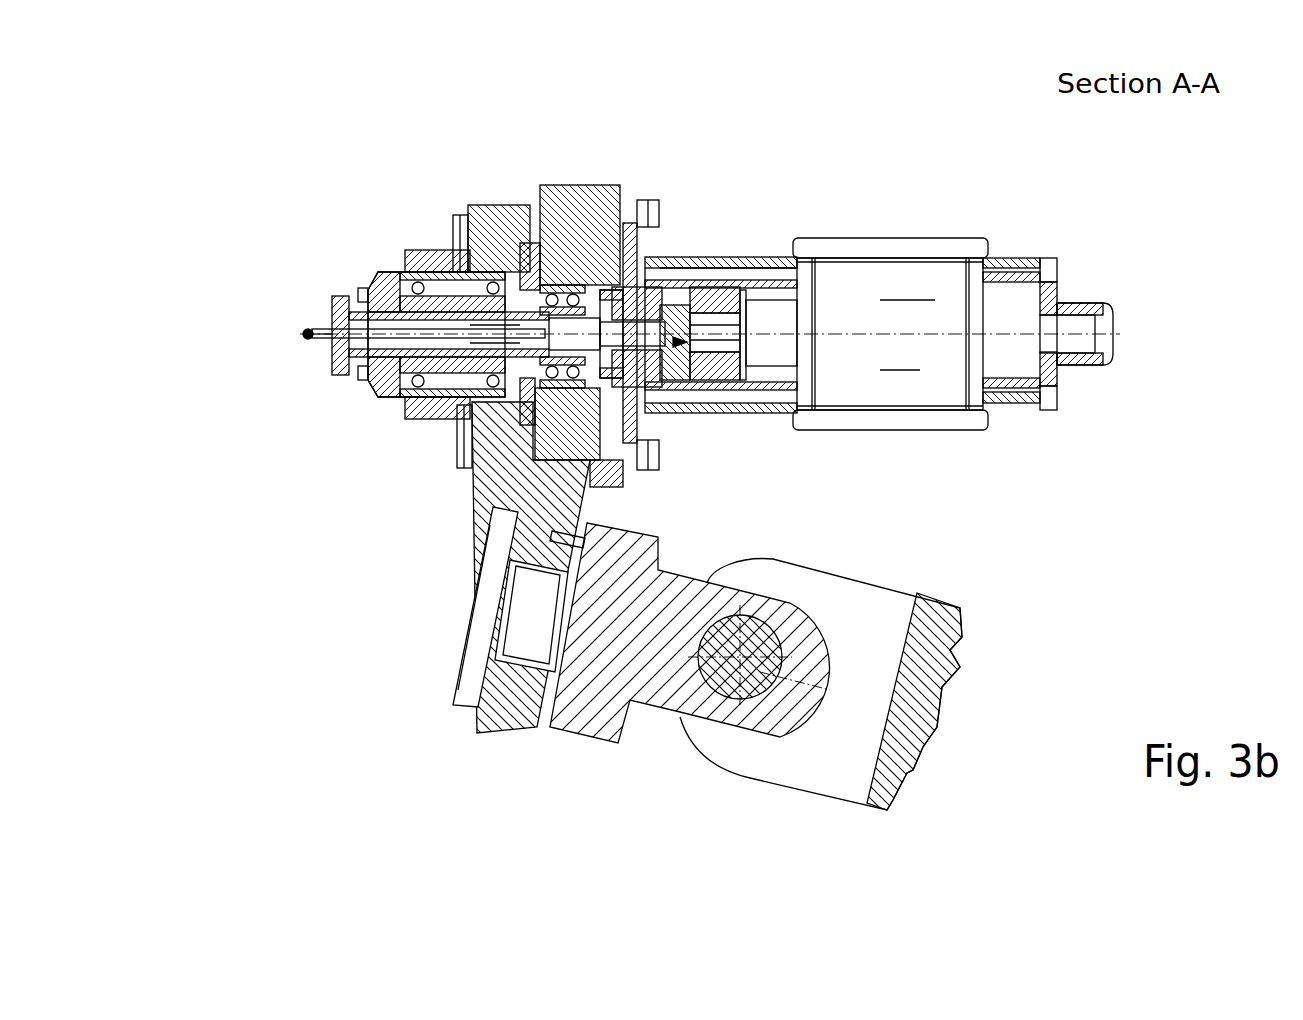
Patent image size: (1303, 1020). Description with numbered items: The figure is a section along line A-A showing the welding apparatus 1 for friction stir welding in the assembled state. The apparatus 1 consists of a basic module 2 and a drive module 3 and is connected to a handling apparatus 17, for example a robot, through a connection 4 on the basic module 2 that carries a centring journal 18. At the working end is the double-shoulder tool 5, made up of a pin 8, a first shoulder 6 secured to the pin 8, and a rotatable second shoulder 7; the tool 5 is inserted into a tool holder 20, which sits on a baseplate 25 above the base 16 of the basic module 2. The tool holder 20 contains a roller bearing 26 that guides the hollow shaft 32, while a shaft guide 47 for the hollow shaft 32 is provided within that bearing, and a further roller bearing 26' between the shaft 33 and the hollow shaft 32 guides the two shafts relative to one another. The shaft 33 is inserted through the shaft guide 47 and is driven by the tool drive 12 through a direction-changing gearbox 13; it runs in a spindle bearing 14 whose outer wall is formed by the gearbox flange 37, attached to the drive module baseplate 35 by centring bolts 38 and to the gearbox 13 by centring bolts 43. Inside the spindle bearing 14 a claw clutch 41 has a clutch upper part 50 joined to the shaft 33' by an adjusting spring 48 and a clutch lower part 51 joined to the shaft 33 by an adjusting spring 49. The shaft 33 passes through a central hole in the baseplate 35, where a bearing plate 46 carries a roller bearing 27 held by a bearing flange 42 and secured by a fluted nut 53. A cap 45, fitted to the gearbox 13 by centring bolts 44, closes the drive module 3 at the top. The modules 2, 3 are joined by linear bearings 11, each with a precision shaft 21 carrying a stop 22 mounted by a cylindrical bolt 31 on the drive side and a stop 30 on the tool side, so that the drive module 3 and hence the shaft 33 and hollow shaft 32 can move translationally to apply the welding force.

The welding apparatus 1 is at (237, 548).
The basic module 2 is at (500, 470).
The drive module 3 is at (1012, 455).
The connection 4 is at (440, 668).
The double-shoulder tool 5 is at (290, 356).
The first shoulder 6 is at (300, 328).
The second shoulder 7 is at (338, 296).
The pin 8 is at (349, 330).
The linear bearing 11 is at (505, 195).
The tool drive 12 is at (910, 380).
The direction-changing gearbox 13 is at (925, 232).
The spindle bearing 14 is at (700, 250).
The base 16 is at (478, 733).
The handling apparatus 17 is at (780, 755).
The centring journal 18 is at (488, 615).
The tool holder 20 is at (362, 402).
The precision shaft 21 is at (640, 468).
The stop 22 is at (652, 450).
The baseplate 25 is at (456, 245).
The roller bearing 26 is at (399, 366).
The roller bearing 26' is at (398, 466).
The roller bearing 27 is at (537, 258).
The stop 30 is at (455, 450).
The cylindrical bolt 31 is at (633, 250).
The hollow shaft 32 is at (410, 418).
The shaft 33 is at (410, 234).
The shaft 33' is at (748, 289).
The drive module baseplate 35 is at (588, 235).
The gearbox flange 37 is at (720, 380).
The centring bolt 38 is at (695, 388).
The claw clutch 41 is at (668, 260).
The bearing flange 42 is at (490, 222).
The centring bolt 43 is at (760, 388).
The centring bolt 44 is at (1048, 262).
The cap 45 is at (1110, 318).
The bearing plate 46 is at (556, 285).
The shaft guide 47 is at (362, 290).
The adjusting spring 48 is at (752, 395).
The adjusting spring 49 is at (740, 392).
The clutch upper part 50 is at (725, 300).
The clutch lower part 51 is at (652, 212).
The fluted nut 53 is at (606, 487).